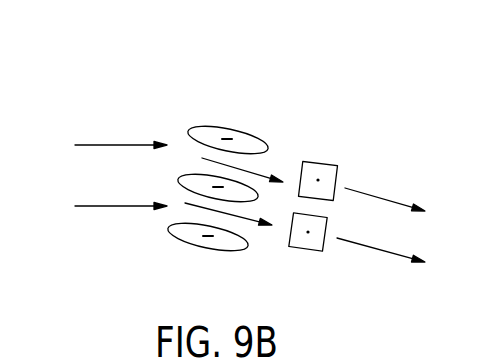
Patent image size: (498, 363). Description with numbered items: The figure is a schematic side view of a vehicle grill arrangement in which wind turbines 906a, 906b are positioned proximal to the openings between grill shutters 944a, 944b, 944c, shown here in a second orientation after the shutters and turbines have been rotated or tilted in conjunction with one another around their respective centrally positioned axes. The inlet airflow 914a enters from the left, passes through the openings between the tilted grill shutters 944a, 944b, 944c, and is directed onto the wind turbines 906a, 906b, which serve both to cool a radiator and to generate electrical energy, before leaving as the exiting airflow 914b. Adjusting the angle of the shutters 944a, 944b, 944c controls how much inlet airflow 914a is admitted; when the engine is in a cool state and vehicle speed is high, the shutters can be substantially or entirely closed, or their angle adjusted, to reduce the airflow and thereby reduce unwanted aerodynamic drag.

The inlet airflow 914a is at (115, 142).
The output light beams 914b is at (370, 247).
The grill shutter 944a is at (218, 127).
The grill shutter 944b is at (193, 177).
The grill shutter 944c is at (178, 241).
The wind turbine 906a is at (322, 162).
The wind turbine 906b is at (305, 250).